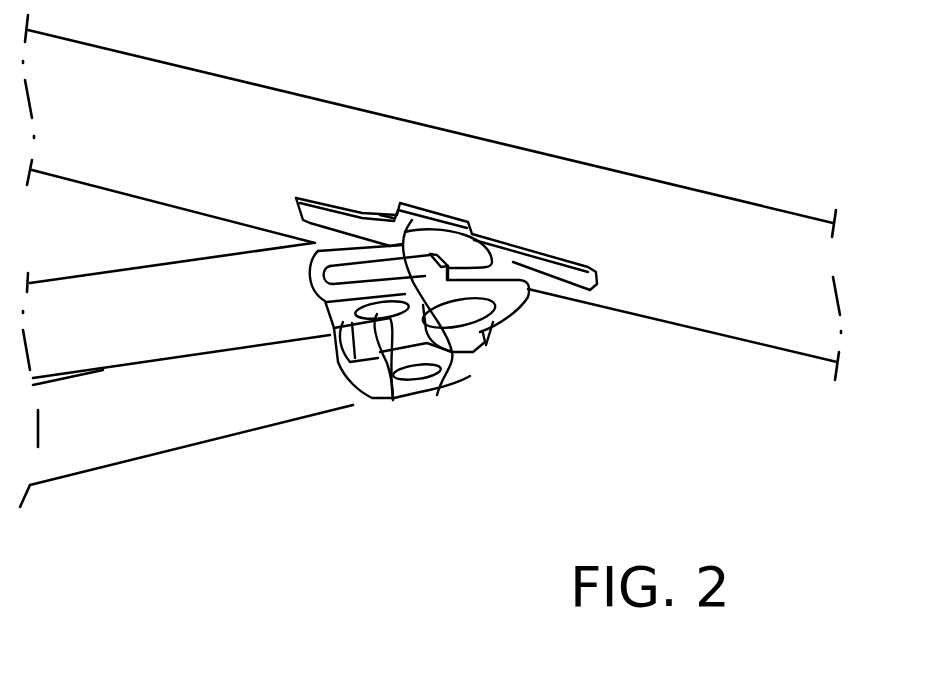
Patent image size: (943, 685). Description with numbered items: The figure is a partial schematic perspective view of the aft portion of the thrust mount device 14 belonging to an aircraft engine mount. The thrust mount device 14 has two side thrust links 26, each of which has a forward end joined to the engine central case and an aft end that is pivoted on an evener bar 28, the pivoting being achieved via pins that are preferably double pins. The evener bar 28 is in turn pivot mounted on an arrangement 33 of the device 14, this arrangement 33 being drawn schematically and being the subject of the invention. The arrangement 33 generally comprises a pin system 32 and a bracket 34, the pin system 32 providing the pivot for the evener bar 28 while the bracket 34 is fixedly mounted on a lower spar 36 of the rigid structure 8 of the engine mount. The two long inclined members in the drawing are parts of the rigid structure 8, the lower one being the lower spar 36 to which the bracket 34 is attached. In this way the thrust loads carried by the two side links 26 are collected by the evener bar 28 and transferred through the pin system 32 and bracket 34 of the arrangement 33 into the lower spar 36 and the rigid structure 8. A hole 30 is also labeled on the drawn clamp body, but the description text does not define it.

The rigid structure 8 is at (720, 333).
The thrust mount device 14 is at (169, 532).
The side thrust links 26 is at (88, 347).
The evener bar 28 is at (503, 327).
The hole 30 is at (417, 373).
The pin system 32 is at (460, 323).
The arrangement 33 is at (499, 418).
The bracket 34 is at (403, 321).
The lower spar 36 is at (668, 313).